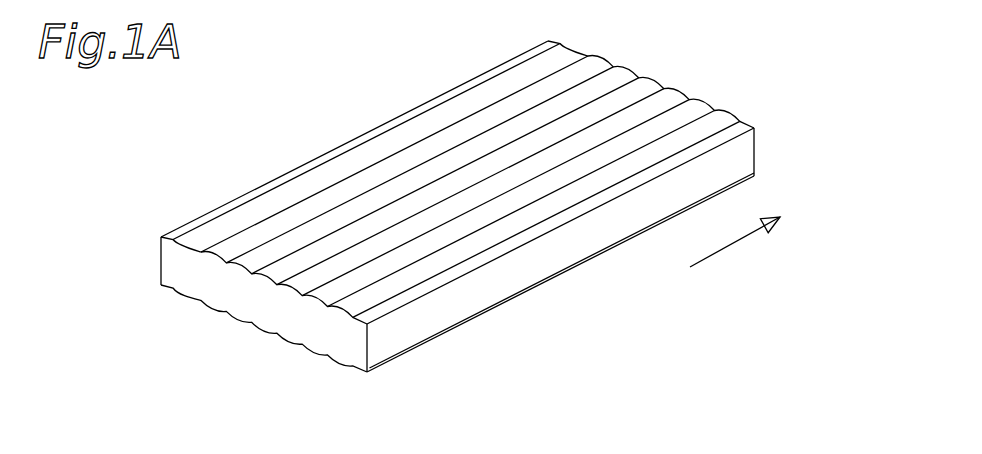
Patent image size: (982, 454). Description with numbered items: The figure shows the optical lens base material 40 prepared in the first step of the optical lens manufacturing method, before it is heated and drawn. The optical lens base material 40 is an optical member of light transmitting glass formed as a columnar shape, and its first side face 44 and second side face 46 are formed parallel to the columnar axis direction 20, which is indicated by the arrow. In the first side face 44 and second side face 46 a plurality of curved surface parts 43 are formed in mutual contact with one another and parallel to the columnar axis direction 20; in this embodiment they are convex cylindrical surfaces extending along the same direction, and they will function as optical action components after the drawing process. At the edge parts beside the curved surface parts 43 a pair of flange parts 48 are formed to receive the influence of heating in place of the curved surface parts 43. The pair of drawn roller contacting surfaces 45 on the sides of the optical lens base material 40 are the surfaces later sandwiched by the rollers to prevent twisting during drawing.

The optical lens base material 40 is at (473, 237).
The curved surface parts 43 is at (298, 187).
The first side face 44 is at (417, 130).
The drawn roller contacting surfaces 45 is at (160, 260).
The second side face 46 is at (333, 378).
The flange parts 48 is at (198, 224).
The columnar axis direction 20 is at (727, 248).